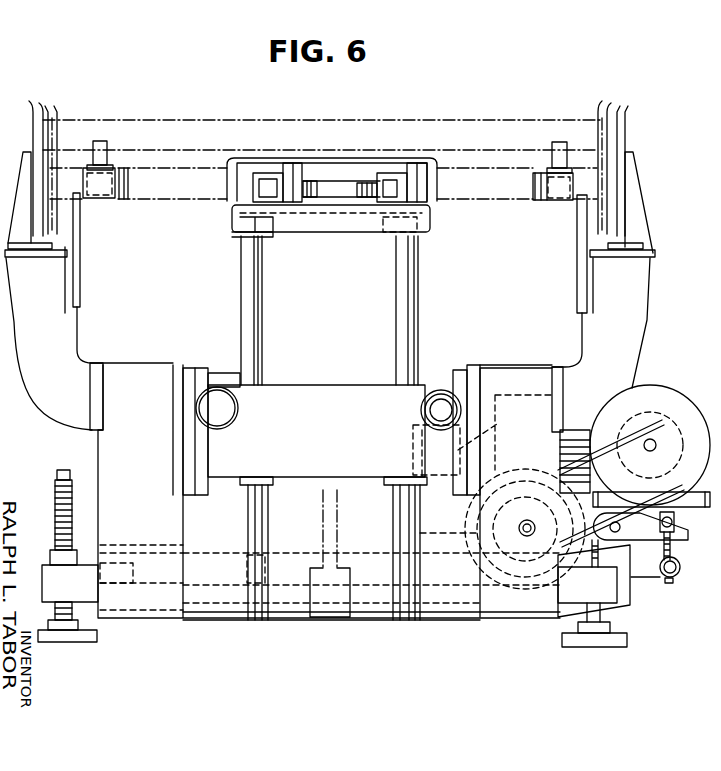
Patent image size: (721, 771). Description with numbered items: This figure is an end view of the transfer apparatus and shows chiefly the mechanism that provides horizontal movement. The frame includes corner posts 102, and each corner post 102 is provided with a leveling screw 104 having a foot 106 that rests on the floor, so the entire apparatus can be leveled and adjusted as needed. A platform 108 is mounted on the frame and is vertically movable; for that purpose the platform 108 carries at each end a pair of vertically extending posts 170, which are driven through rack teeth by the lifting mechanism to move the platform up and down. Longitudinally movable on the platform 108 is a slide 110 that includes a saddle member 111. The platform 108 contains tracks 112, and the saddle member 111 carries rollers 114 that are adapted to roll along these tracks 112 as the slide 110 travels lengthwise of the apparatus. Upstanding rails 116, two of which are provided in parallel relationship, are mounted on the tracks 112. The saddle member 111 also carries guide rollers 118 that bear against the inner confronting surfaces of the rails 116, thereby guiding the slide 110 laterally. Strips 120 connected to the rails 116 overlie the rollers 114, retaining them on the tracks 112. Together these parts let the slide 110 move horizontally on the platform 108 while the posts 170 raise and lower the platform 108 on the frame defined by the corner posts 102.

The corner post 102 is at (102, 452).
The leveling screw 104 is at (70, 506).
The foot 106 is at (95, 636).
The platform 108 is at (430, 224).
The slide 110 is at (277, 118).
The saddle member 111 is at (433, 162).
The track 112 is at (383, 207).
The roller 114 is at (400, 187).
The rail 116 is at (283, 186).
The guide roller 118 is at (305, 188).
The strip 120 is at (262, 166).
The post 170 is at (416, 284).